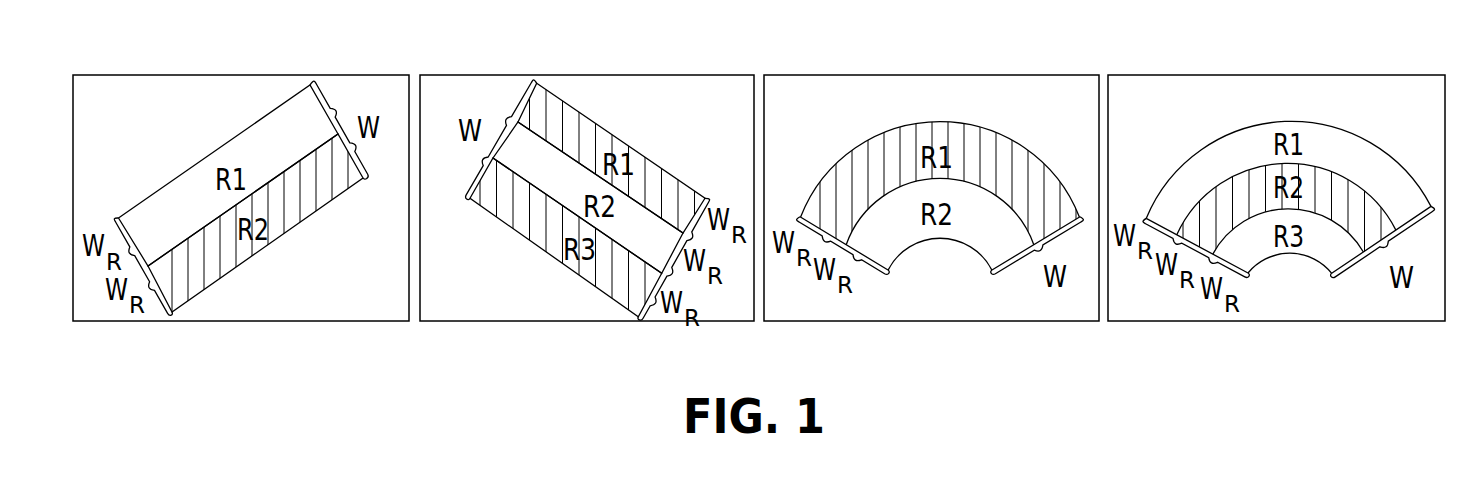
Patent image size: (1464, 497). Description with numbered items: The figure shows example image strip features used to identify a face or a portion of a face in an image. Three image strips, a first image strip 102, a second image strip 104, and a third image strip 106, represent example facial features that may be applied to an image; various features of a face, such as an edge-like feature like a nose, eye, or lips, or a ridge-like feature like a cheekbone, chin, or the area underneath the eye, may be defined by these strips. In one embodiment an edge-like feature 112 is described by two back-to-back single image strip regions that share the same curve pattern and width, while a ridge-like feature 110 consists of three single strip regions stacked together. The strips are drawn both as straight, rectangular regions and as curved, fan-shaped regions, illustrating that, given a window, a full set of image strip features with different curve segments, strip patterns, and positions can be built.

The image strip R1 102 is at (628, 140).
The image strip R2 104 is at (507, 123).
The image strip R3 106 is at (530, 243).
The ridge-like feature 110 is at (678, 75).
The edge-like feature 112 is at (998, 75).